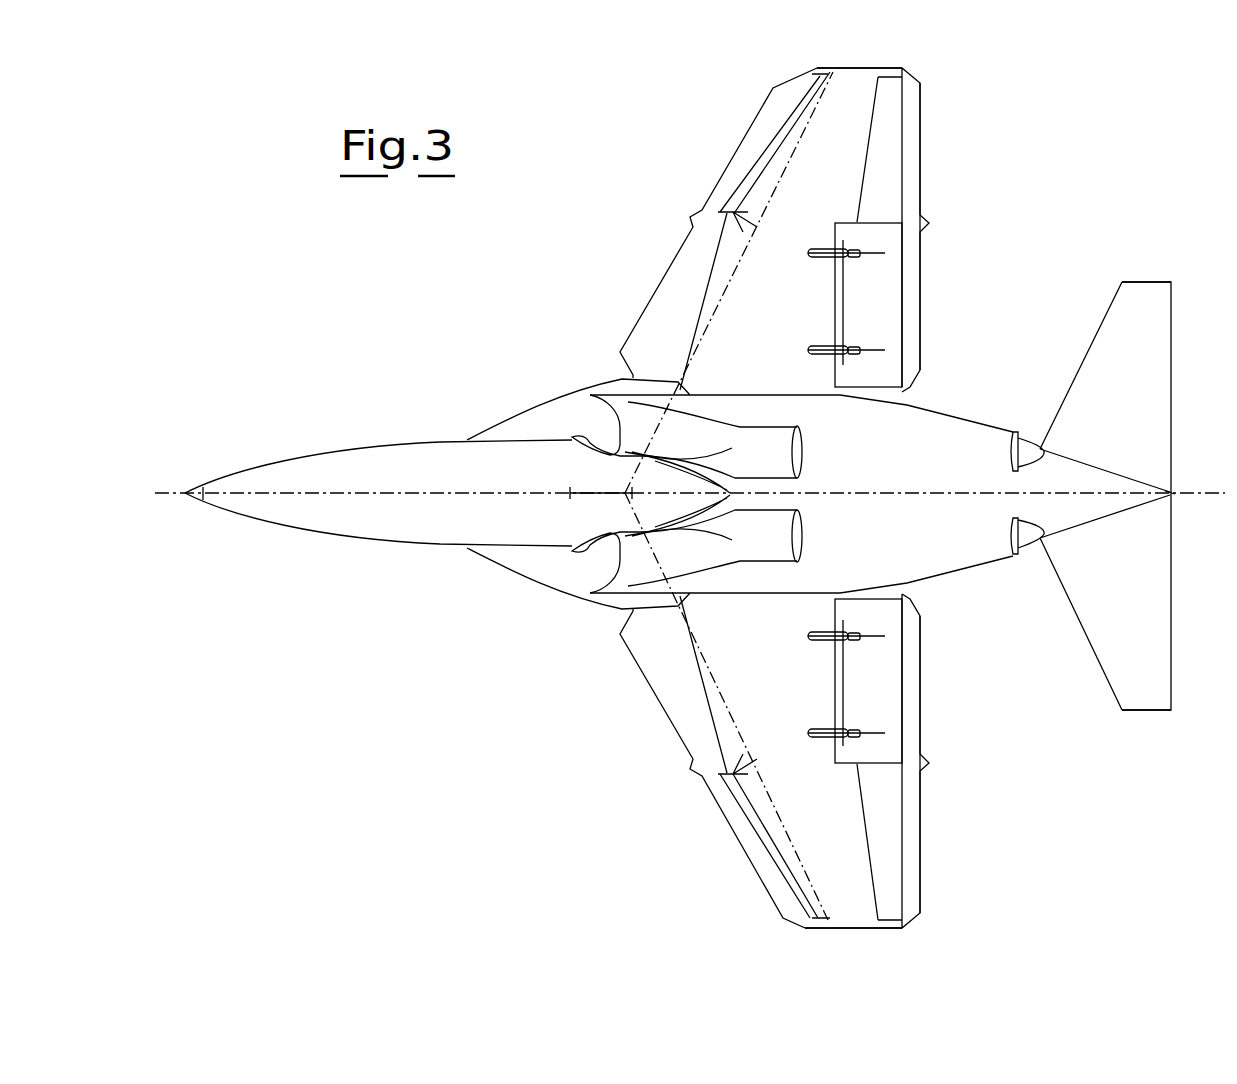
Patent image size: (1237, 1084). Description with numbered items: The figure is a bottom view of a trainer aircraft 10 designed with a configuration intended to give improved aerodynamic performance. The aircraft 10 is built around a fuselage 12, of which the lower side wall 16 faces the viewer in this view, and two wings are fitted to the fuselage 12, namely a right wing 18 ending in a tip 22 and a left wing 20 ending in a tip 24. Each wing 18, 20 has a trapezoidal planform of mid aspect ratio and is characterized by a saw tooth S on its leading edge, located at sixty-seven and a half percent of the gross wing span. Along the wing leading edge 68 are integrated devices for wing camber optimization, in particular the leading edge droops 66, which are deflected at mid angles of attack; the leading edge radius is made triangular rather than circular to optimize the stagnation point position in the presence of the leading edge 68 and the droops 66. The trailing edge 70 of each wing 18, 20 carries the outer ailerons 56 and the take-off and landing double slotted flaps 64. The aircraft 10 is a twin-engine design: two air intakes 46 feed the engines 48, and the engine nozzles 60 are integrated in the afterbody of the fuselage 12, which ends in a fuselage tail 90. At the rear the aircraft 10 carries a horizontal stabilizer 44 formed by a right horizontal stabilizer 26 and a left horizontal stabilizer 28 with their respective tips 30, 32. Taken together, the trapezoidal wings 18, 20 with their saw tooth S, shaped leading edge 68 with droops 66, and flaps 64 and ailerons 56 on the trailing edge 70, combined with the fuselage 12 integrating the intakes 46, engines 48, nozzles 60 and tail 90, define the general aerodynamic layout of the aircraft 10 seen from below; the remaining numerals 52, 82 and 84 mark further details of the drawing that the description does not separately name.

The aircraft 10 is at (430, 710).
The fuselage 12 is at (385, 543).
The lower side wall 16 is at (956, 437).
The right wing 18 is at (816, 818).
The left wing 20 is at (818, 168).
The tip 22 is at (875, 930).
The tip 24 is at (872, 67).
The right horizontal stabilizer 26 is at (1133, 607).
The left horizontal stabilizer 28 is at (1136, 369).
The tip 30 is at (1143, 710).
The tip 32 is at (1171, 282).
The horizontal stabilizer 44 is at (1137, 281).
The air intakes 46 is at (612, 425).
The engines 48 is at (773, 520).
The nose tip 52 is at (201, 499).
The outer ailerons 56 is at (893, 126).
The engine nozzles 60 is at (1038, 500).
The take-off and landing double slotted flaps 64 is at (885, 307).
The leading edge droops 66 is at (767, 172).
The wing leading edge 68 is at (702, 207).
The trailing edge 70 is at (939, 498).
The engine nozzle 82 is at (1025, 545).
The fuselage side 84 is at (963, 570).
The fuselage tail 90 is at (1173, 488).
The saw tooth S is at (743, 232).